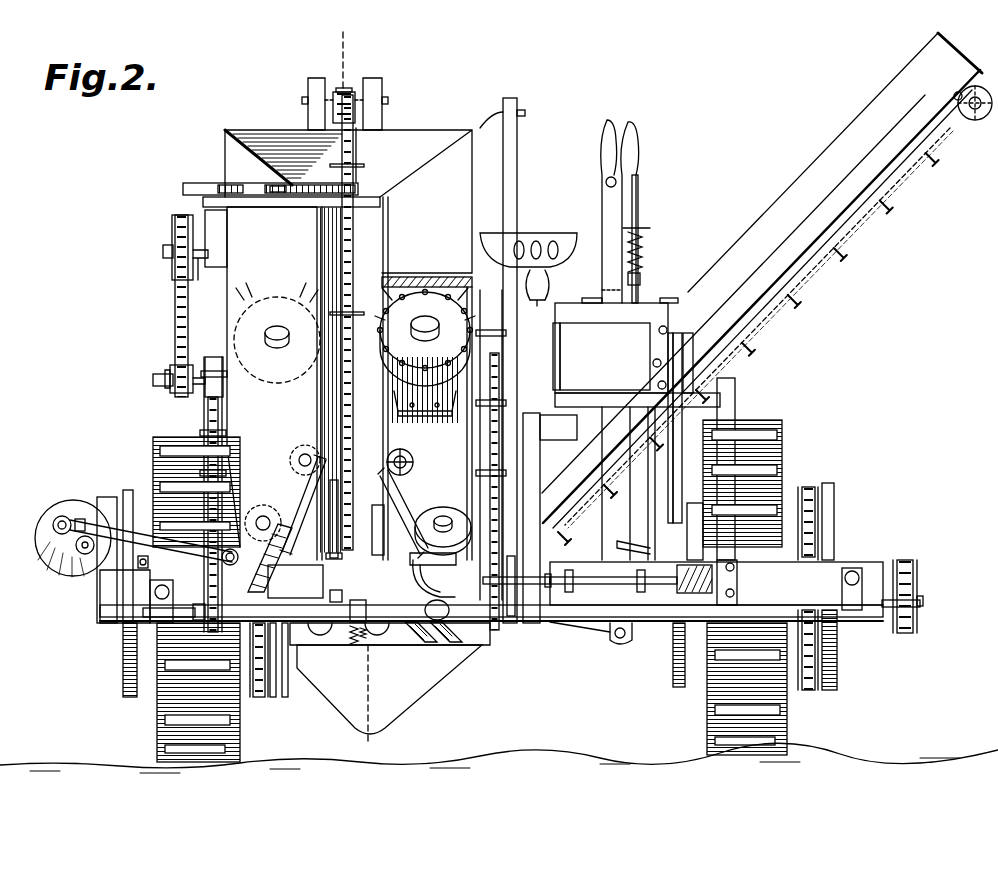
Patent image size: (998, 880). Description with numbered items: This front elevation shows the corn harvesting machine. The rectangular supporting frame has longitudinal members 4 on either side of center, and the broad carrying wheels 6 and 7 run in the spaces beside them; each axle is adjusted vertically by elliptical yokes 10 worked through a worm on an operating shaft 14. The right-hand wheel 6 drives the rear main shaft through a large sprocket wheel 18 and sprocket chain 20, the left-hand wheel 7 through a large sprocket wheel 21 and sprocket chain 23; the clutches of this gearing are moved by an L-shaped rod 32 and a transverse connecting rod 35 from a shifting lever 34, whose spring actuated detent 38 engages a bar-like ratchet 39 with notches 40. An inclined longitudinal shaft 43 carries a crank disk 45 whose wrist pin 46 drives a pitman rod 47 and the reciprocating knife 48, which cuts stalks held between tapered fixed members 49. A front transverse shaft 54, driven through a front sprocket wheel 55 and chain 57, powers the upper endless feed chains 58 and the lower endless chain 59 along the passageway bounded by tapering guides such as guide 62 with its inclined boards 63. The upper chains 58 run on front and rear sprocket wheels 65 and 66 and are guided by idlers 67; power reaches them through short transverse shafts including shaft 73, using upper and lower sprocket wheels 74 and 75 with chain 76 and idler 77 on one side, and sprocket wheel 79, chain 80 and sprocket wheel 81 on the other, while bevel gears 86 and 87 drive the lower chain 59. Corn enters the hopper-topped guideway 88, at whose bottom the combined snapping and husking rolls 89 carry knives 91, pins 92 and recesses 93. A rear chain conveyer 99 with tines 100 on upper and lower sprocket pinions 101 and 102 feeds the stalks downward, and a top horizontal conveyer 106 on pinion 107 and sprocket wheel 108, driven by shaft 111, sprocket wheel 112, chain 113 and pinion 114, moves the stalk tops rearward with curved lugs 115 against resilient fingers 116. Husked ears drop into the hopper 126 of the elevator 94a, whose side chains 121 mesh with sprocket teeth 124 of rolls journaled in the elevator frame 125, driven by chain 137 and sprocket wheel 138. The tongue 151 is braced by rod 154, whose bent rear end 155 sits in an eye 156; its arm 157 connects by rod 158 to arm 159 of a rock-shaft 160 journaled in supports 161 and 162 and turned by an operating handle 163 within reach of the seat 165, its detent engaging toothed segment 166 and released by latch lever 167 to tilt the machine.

The longitudinal bars 4 is at (355, 387).
The carrying wheel 6 is at (153, 447).
The carrying wheel 7 is at (782, 428).
The vertical yokes 10 is at (128, 490).
The operating shaft 14 is at (137, 572).
The large sprocket wheel 18 is at (262, 698).
The sprocket chain 20 is at (278, 698).
The large sprocket wheel 21 is at (815, 490).
The sprocket chain 23 is at (810, 690).
The rod 32 is at (636, 541).
The shifting lever 34 is at (614, 120).
The connecting rod 35 is at (600, 640).
The spring actuated detent 38 is at (640, 302).
The ratchet 39 is at (598, 318).
The notches 40 is at (586, 298).
The longitudinal shaft 43 is at (88, 548).
The crank disk 45 is at (73, 506).
The wrist pin 46 is at (53, 525).
The pitman rod 47 is at (170, 548).
The reciprocatable knife 48 is at (335, 600).
The fixed members 49 is at (362, 590).
The front transverse shaft 54 is at (278, 604).
The front sprocket wheel 55 is at (900, 632).
The sprocket chain 57 is at (910, 632).
The upper endless chains 58 is at (322, 402).
The lower endless chain 59 is at (385, 528).
The tapering guide 62 is at (280, 585).
The inclined boards 63 is at (338, 345).
The front sprocket wheels 65 is at (440, 506).
The rear sprocket wheels 66 is at (354, 336).
The idlers 67 is at (292, 463).
The short transverse shaft 73 is at (154, 379).
The upper sprocket wheel 74 is at (504, 336).
The lower sprocket wheel 75 is at (503, 632).
The sprocket chain 76 is at (532, 453).
The idler 77 is at (150, 566).
The sprocket wheel 79 is at (212, 358).
The sprocket chain 80 is at (208, 420).
The sprocket wheel 81 is at (205, 606).
The bevel gear 86 is at (415, 595).
The bevel gear 87 is at (426, 630).
The longitudinal guideway 88 is at (355, 268).
The combined snapping and husking rolls 89 is at (352, 645).
The knives 91 is at (322, 636).
The pins 92 is at (358, 616).
The recesses 93 is at (376, 628).
The elevator 94a is at (762, 263).
The endless chain conveyer 99 is at (357, 147).
The fingers 100 is at (364, 166).
The upper sprocket pinion 101 is at (356, 96).
The lower sprocket pinion 102 is at (364, 508).
The top horizontal endless chain conveyer 106 is at (283, 193).
The front horizontal sprocket pinion 107 is at (300, 176).
The rear sprocket wheel 108 is at (250, 176).
The short transversely disposed shaft 111 is at (199, 270).
The sprocket wheel 112 is at (172, 240).
The sprocket chain 113 is at (176, 302).
The sprocket pinion 114 is at (172, 370).
The fingers 115 is at (190, 188).
The resilient fingers 116 is at (386, 206).
The endless chains 121 is at (856, 226).
The sprocket teeth 124 is at (954, 97).
The frame 125 is at (818, 160).
The hopper 126 is at (435, 675).
The sprocket chain 137 is at (925, 172).
The sprocket wheel 138 is at (966, 122).
The draft-beam 151 is at (713, 580).
The rod 154 is at (600, 584).
The rear end 155 is at (568, 570).
The eye 156 is at (640, 570).
The arm 157 is at (687, 540).
The rod 158 is at (653, 363).
The arm 159 is at (694, 328).
The rock-shaft 160 is at (605, 396).
The bearing 161 is at (736, 400).
The bearing 162 is at (578, 426).
The operating handle 163 is at (553, 275).
The seat 165 is at (546, 237).
The toothed segment 166 is at (558, 362).
The latch lever 167 is at (549, 295).